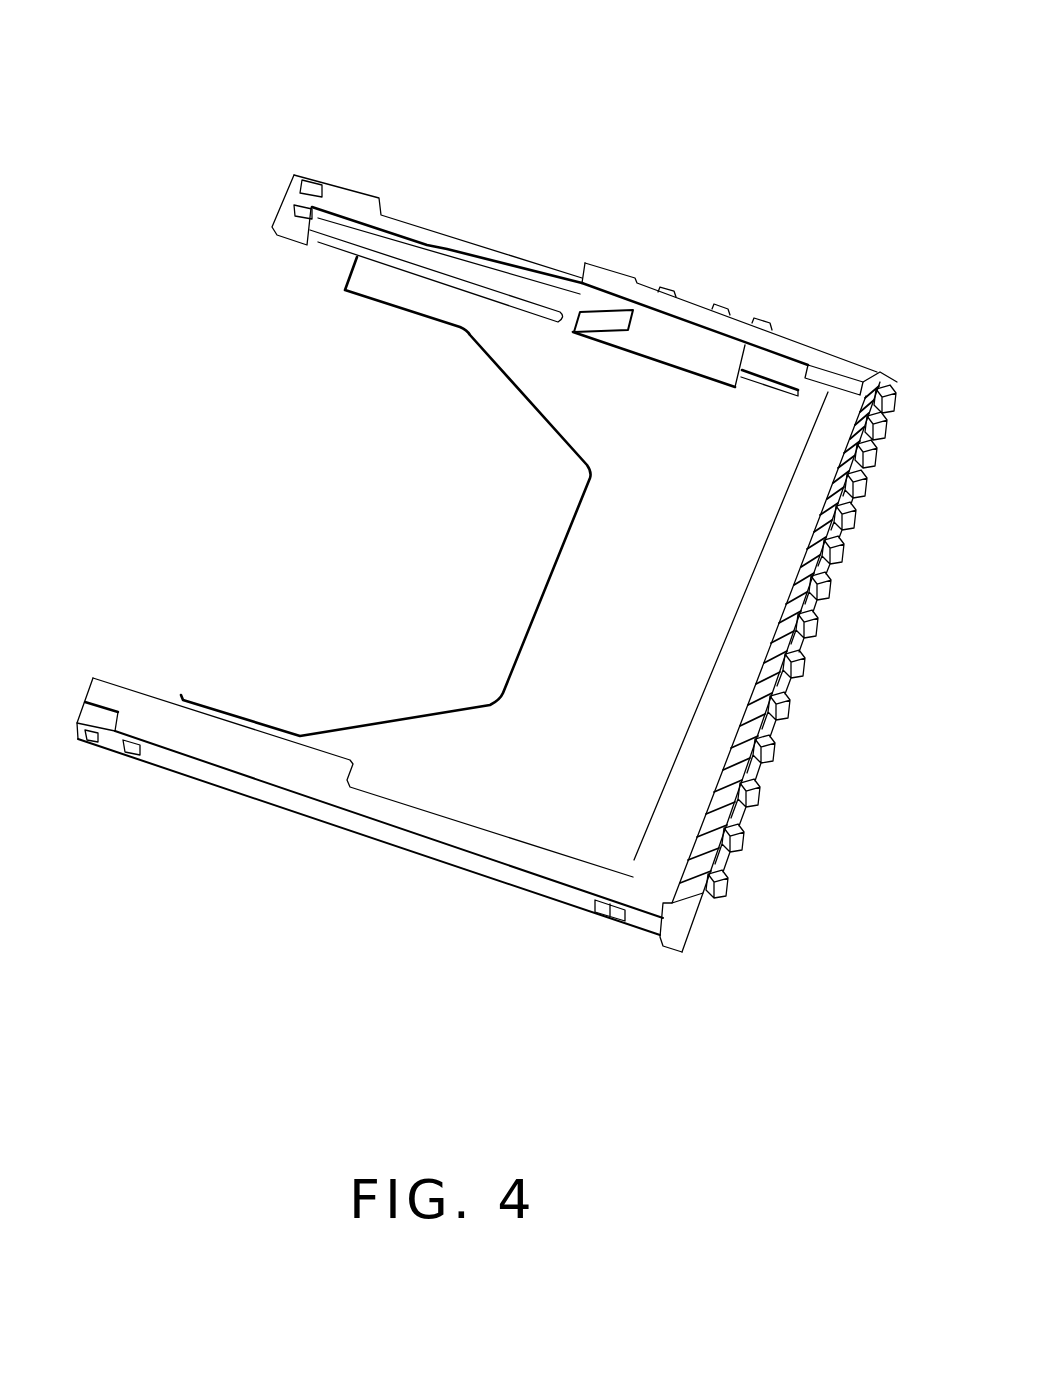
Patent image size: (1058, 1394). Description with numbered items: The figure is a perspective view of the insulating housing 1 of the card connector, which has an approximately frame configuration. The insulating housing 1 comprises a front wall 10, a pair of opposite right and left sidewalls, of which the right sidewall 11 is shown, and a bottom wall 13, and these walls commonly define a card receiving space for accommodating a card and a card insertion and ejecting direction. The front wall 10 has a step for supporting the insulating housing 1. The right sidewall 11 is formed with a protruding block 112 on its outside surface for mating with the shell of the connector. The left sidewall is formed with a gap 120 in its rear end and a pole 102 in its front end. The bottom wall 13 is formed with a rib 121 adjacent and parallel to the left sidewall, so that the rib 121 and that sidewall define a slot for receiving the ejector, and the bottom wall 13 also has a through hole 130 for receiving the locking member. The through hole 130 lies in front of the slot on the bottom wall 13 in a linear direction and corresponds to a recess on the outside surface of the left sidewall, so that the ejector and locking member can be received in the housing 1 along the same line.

The insulating housing 1 is at (468, 37).
The front wall 10 is at (773, 580).
The right sidewall 11 is at (382, 810).
The protruding block 112 is at (133, 753).
The bottom wall 13 is at (580, 603).
The gap 120 is at (307, 193).
The rib 121 is at (340, 243).
The through hole 130 is at (675, 338).
The pole 102 is at (835, 380).